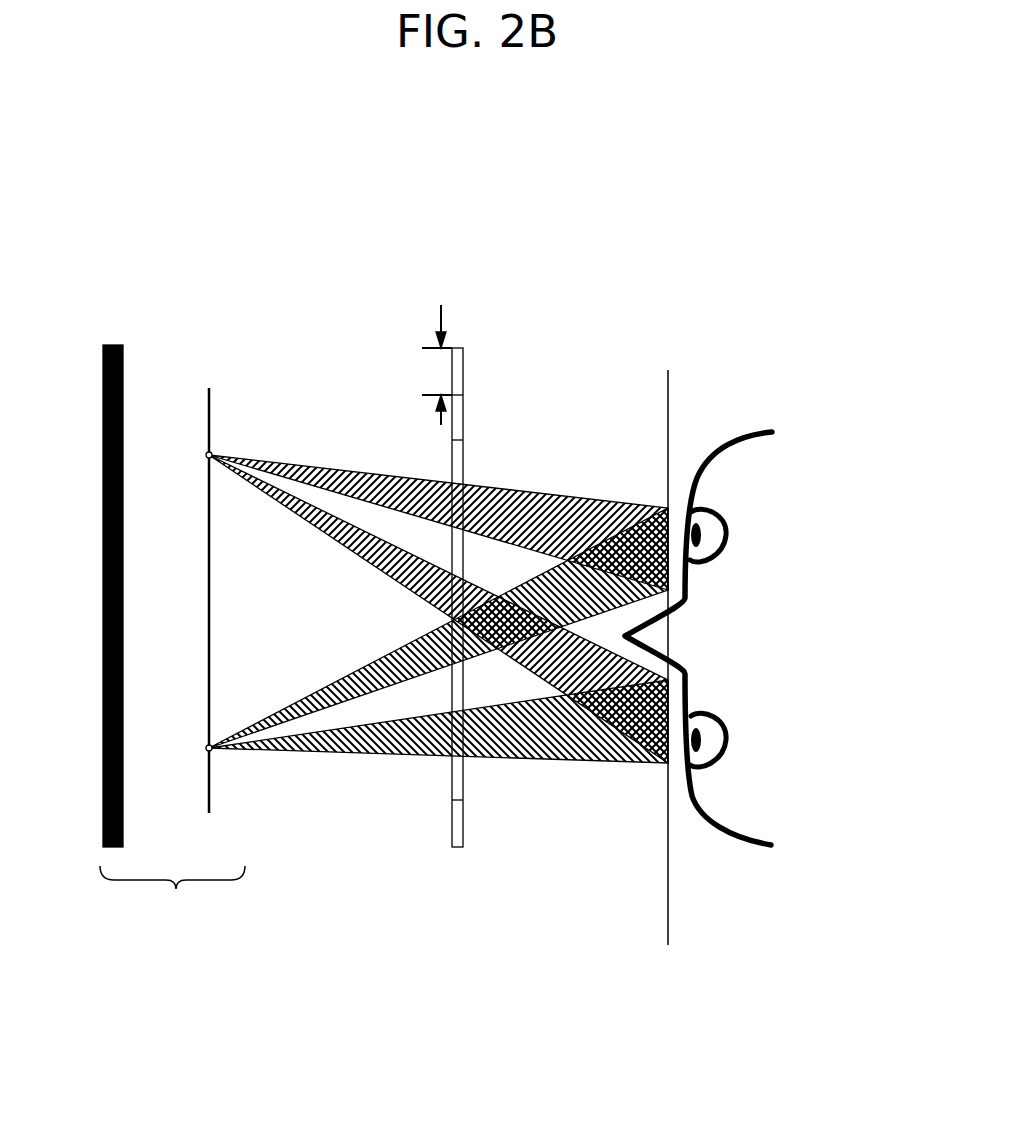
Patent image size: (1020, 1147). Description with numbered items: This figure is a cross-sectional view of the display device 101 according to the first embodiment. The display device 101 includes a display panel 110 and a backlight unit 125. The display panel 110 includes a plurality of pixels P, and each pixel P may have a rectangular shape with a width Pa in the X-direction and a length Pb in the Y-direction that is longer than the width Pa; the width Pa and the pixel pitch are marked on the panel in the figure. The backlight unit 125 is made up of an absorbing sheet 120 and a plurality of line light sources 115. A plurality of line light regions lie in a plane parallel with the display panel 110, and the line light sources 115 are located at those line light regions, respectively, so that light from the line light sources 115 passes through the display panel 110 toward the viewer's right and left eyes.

The display device 101 is at (590, 186).
The display panel 110 is at (462, 347).
The line light sources 115 is at (209, 388).
The absorbing sheet 120 is at (113, 345).
The backlight unit 125 is at (172, 897).